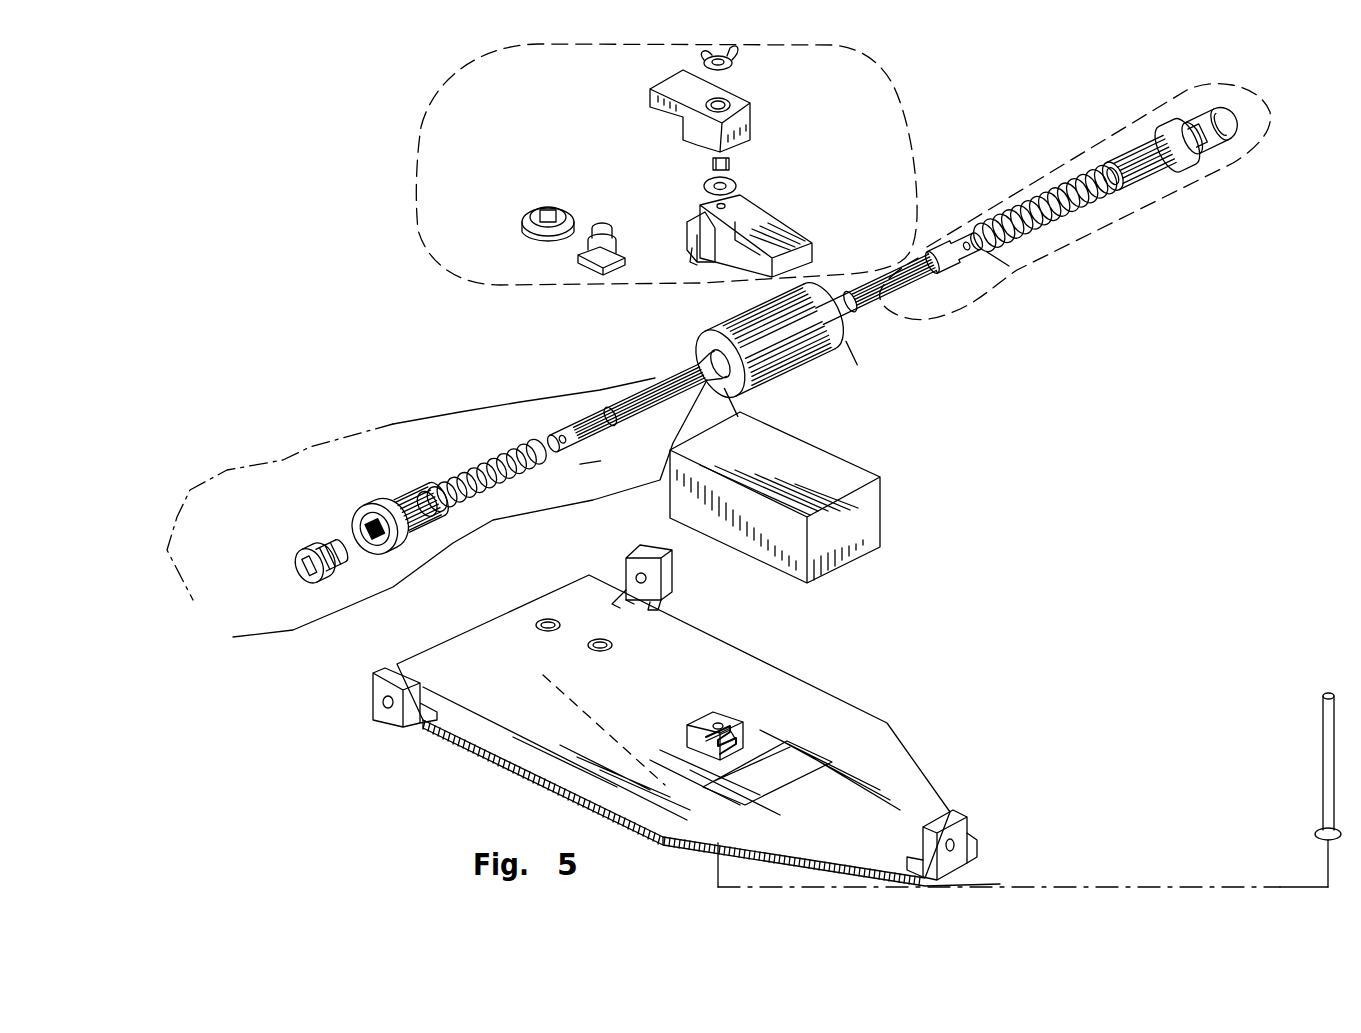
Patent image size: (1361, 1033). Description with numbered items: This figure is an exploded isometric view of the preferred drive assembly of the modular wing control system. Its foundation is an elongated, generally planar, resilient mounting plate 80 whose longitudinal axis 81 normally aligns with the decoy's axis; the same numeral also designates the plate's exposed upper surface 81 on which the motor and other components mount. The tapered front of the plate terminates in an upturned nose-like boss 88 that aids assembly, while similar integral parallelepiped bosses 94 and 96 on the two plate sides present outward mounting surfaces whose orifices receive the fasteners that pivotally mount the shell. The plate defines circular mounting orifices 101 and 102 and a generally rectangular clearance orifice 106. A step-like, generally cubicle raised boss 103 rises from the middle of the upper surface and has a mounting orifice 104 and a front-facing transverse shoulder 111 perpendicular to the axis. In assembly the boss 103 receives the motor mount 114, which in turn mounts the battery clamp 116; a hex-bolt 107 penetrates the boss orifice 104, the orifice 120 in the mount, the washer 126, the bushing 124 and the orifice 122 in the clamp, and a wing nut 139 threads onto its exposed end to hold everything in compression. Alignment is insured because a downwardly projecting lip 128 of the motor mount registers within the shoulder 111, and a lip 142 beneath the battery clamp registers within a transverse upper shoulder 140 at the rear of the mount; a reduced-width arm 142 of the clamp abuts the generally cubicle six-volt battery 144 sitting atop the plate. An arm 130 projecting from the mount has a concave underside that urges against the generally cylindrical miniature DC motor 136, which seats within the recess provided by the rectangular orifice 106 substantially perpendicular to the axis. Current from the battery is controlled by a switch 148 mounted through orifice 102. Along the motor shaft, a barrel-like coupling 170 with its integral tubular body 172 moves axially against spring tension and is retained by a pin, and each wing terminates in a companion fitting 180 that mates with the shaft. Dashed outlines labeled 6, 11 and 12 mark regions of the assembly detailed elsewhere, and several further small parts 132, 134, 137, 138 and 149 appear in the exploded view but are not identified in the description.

The clamp assembly 6 is at (659, 164).
The knob assembly 11 is at (437, 511).
The bushing and screw assembly 12 is at (1087, 200).
The mounting plate 80 is at (807, 690).
The longitudinal axis 81 is at (1050, 826).
The nose-like boss 88 is at (1008, 778).
The boss 94 is at (374, 706).
The boss 96 is at (673, 580).
The mounting orifice 101 is at (545, 622).
The mounting orifice 102 is at (600, 640).
The raised boss 103 is at (690, 742).
The mounting orifice 104 is at (719, 724).
The clearance orifice 106 is at (758, 782).
The hex-bolt 107 is at (1328, 755).
The transverse shoulder 111 is at (760, 732).
The motor mount 114 is at (762, 228).
The battery clamp 116 is at (650, 82).
The orifice 120 is at (728, 205).
The orifice 122 is at (748, 104).
The bushing 124 is at (735, 165).
The washer 126 is at (703, 187).
The lip 128 is at (692, 258).
The arm 130 is at (800, 256).
The bushing 132 is at (1150, 158).
The end screw 134 is at (1210, 129).
The DC motor 136 is at (815, 378).
The pin 137 is at (998, 258).
The spring 138 is at (1045, 208).
The wing nut 139 is at (742, 62).
The upper shoulder 140 is at (697, 222).
The lip 142 is at (688, 142).
The battery 144 is at (852, 470).
The switch 148 is at (580, 258).
The bolt head 149 is at (526, 226).
The coupling 170 is at (407, 503).
The tubular body 172 is at (481, 477).
The companion fitting 180 is at (292, 580).